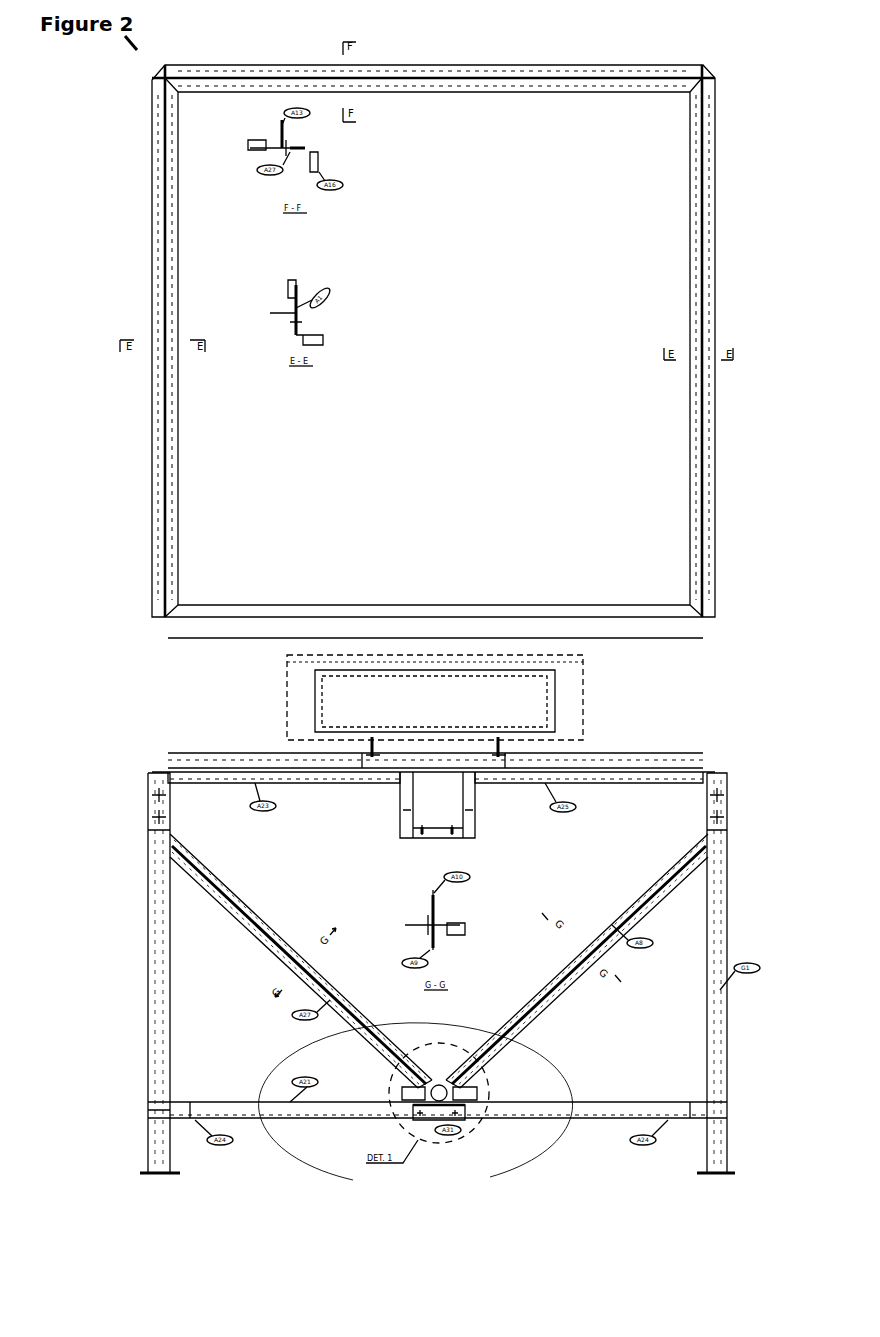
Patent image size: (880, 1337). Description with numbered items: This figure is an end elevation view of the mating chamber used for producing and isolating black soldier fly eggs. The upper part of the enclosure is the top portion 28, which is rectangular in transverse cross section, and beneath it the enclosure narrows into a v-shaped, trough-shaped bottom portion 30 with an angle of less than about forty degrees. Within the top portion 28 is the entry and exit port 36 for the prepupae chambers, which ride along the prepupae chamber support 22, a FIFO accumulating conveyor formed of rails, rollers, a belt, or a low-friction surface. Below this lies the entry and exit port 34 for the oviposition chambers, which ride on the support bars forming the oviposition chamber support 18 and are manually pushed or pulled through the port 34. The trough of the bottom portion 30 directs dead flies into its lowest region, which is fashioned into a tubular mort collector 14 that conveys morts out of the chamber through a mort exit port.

The top portion 28 is at (449, 367).
The prepupae chamber support 22 is at (500, 747).
The entry and exit ports 36 is at (402, 712).
The entry and exit ports 34 is at (445, 806).
The oviposition chamber support 18 is at (477, 830).
The bottom portion 30 is at (296, 861).
The mort collector 14 is at (483, 1098).